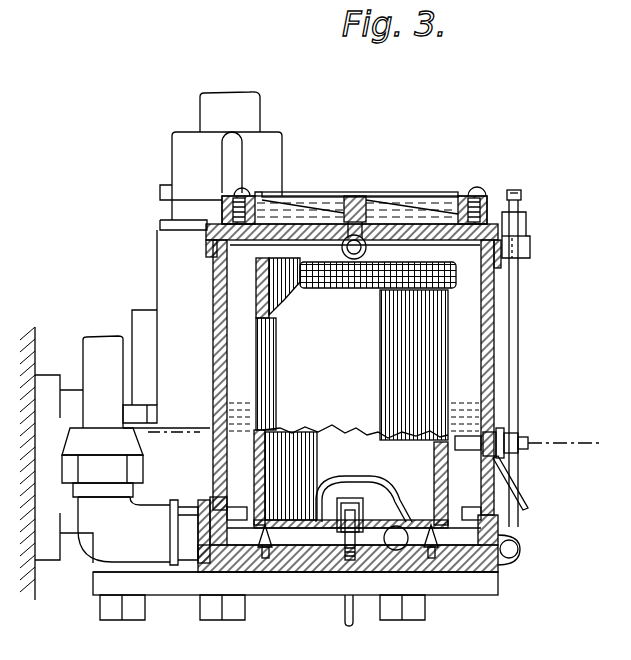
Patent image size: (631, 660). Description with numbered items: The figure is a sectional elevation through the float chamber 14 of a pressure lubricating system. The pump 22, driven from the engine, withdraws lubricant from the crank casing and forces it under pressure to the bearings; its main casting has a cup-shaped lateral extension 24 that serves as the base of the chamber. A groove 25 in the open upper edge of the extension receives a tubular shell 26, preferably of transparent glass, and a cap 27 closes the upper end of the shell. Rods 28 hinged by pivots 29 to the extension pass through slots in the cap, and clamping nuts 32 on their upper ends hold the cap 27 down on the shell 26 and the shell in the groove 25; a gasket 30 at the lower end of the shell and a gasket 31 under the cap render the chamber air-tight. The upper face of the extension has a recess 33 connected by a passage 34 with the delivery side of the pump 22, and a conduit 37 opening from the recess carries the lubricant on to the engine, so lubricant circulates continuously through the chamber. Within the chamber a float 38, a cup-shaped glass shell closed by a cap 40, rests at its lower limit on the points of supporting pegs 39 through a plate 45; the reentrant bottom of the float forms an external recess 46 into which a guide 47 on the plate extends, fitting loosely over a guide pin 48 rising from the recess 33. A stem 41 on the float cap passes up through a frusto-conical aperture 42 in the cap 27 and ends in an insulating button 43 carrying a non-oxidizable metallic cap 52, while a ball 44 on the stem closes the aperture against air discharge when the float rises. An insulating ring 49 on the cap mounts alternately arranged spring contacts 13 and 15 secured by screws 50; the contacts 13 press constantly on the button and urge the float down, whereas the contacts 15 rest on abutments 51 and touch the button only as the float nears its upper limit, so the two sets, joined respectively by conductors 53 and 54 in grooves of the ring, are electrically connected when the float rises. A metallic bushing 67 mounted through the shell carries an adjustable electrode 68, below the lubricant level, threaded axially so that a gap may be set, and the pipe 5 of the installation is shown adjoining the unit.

The supply pipe / wall 5 is at (62, 431).
The contacts 13 is at (275, 196).
The float chamber 14 is at (490, 366).
The contacts 15 is at (380, 196).
The pump 22 is at (193, 280).
The lateral extension 24 is at (500, 574).
The groove 25 is at (202, 500).
The tubular shell 26 is at (212, 313).
The cap 27 is at (206, 232).
The rods 28 is at (518, 318).
The pivots 29 is at (520, 549).
The gasket 30 is at (538, 522).
The gasket 31 is at (215, 261).
The clamping nuts 32 is at (530, 218).
The recess 33 is at (292, 560).
The passage 34 is at (398, 536).
The conduit 37 is at (254, 87).
The float 38 is at (272, 344).
The supporting pegs 39 is at (260, 542).
The cap 40 is at (255, 267).
The stem 41 is at (400, 205).
The aperture 42 is at (425, 212).
The insulating button 43 is at (333, 192).
The ball 44 is at (372, 252).
The plate 45 is at (296, 538).
The external recess 46 is at (372, 490).
The guide 47 is at (356, 498).
The guide pin 48 is at (347, 510).
The ring 49 is at (293, 190).
The screws 50 is at (480, 192).
The abutments 51 is at (393, 206).
The metallic cap 52 is at (358, 192).
The conductor 53 is at (222, 198).
The conductor 54 is at (222, 207).
The metallic bushing 67 is at (489, 483).
The electrode 68 is at (530, 441).